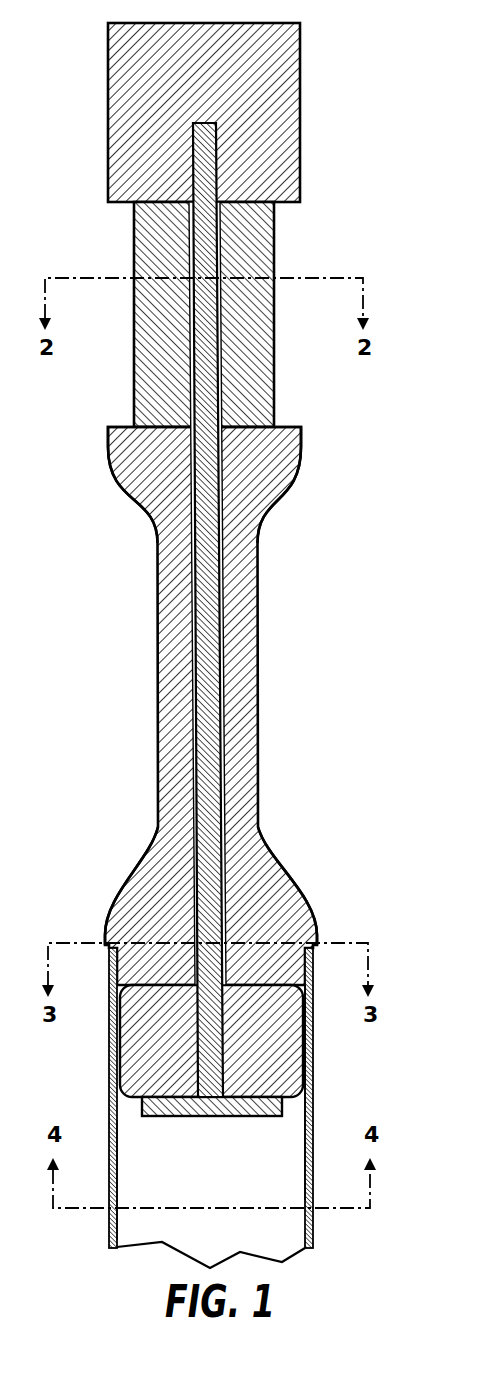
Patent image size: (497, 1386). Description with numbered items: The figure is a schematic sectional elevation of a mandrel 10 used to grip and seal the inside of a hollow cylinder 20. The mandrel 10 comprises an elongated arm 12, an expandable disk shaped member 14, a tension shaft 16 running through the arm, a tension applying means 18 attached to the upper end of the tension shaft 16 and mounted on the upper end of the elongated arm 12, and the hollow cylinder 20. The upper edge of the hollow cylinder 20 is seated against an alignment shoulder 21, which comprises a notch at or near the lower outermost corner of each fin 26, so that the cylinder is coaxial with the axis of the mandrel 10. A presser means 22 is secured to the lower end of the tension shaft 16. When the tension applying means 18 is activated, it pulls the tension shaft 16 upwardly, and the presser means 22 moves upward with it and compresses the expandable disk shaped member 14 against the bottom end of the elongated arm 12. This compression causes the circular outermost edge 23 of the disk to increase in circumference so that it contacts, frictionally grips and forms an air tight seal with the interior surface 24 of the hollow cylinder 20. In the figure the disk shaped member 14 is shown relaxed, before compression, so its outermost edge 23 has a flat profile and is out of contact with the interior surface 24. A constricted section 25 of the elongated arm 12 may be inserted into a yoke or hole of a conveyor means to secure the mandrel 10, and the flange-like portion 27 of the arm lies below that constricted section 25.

The mandrel 10 is at (423, 194).
The elongated arm 12 is at (256, 650).
The expandable disk shaped member 14 is at (127, 1077).
The tension shaft 16 is at (210, 680).
The tension applying means 18 is at (302, 108).
The hollow cylinder 20 is at (315, 1223).
The alignment shoulder 21 is at (313, 952).
The presser means 22 is at (212, 1117).
The circular outermost edge 23 is at (303, 1062).
The interior surface 24 is at (307, 1160).
The constricted section 25 is at (274, 245).
The fin 26 is at (127, 882).
The flange 27 is at (287, 427).